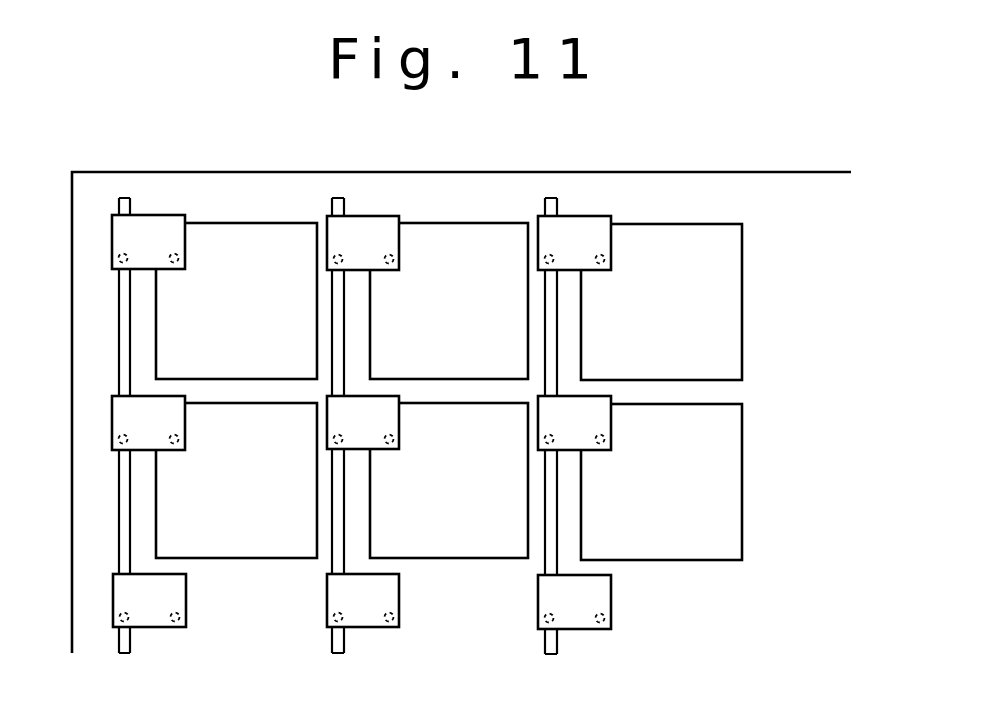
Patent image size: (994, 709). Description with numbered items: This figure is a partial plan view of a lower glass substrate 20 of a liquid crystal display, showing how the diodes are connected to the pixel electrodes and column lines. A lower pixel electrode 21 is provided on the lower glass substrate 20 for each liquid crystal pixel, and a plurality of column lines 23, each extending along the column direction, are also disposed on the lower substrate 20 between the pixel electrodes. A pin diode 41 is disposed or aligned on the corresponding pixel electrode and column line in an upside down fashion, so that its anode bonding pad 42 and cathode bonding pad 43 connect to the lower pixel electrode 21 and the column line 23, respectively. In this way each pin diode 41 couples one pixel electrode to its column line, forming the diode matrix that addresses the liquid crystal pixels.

The lower glass substrate 20 is at (415, 171).
The lower pixel electrode 21 is at (236, 301).
The column line 23 is at (545, 645).
The pin diode 41 is at (378, 412).
The anode bonding pad 42 is at (333, 437).
The cathode bonding pad 43 is at (397, 432).